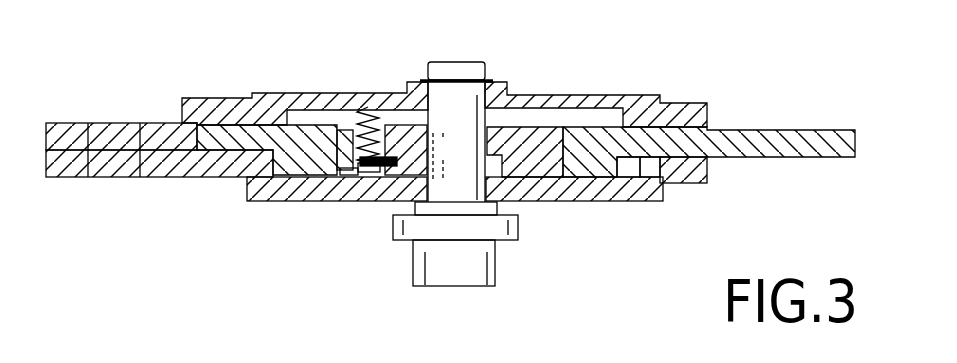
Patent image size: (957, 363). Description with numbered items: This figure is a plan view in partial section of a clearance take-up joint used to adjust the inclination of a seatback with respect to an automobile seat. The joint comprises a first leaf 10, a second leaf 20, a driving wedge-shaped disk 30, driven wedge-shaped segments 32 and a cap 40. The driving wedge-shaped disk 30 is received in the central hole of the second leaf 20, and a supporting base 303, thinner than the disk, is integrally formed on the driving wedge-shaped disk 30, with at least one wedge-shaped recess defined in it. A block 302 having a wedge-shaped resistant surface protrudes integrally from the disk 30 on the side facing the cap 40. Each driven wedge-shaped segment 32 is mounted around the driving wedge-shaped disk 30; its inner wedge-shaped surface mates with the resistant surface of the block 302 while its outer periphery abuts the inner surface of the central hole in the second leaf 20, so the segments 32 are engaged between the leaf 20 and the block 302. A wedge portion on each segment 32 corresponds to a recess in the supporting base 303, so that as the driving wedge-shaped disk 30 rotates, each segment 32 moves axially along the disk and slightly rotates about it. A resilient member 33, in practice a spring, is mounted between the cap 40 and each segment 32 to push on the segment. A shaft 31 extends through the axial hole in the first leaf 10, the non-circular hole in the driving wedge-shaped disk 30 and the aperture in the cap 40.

The first leaf 10 is at (208, 172).
The second leaf 20 is at (598, 147).
The driving wedge-shaped disk 30 is at (552, 165).
The shaft 31 is at (458, 192).
The driven wedge-shaped segment 32 is at (341, 133).
The resilient member 33 is at (367, 108).
The cap 40 is at (220, 108).
The block 302 is at (368, 165).
The supporting base 303 is at (343, 177).